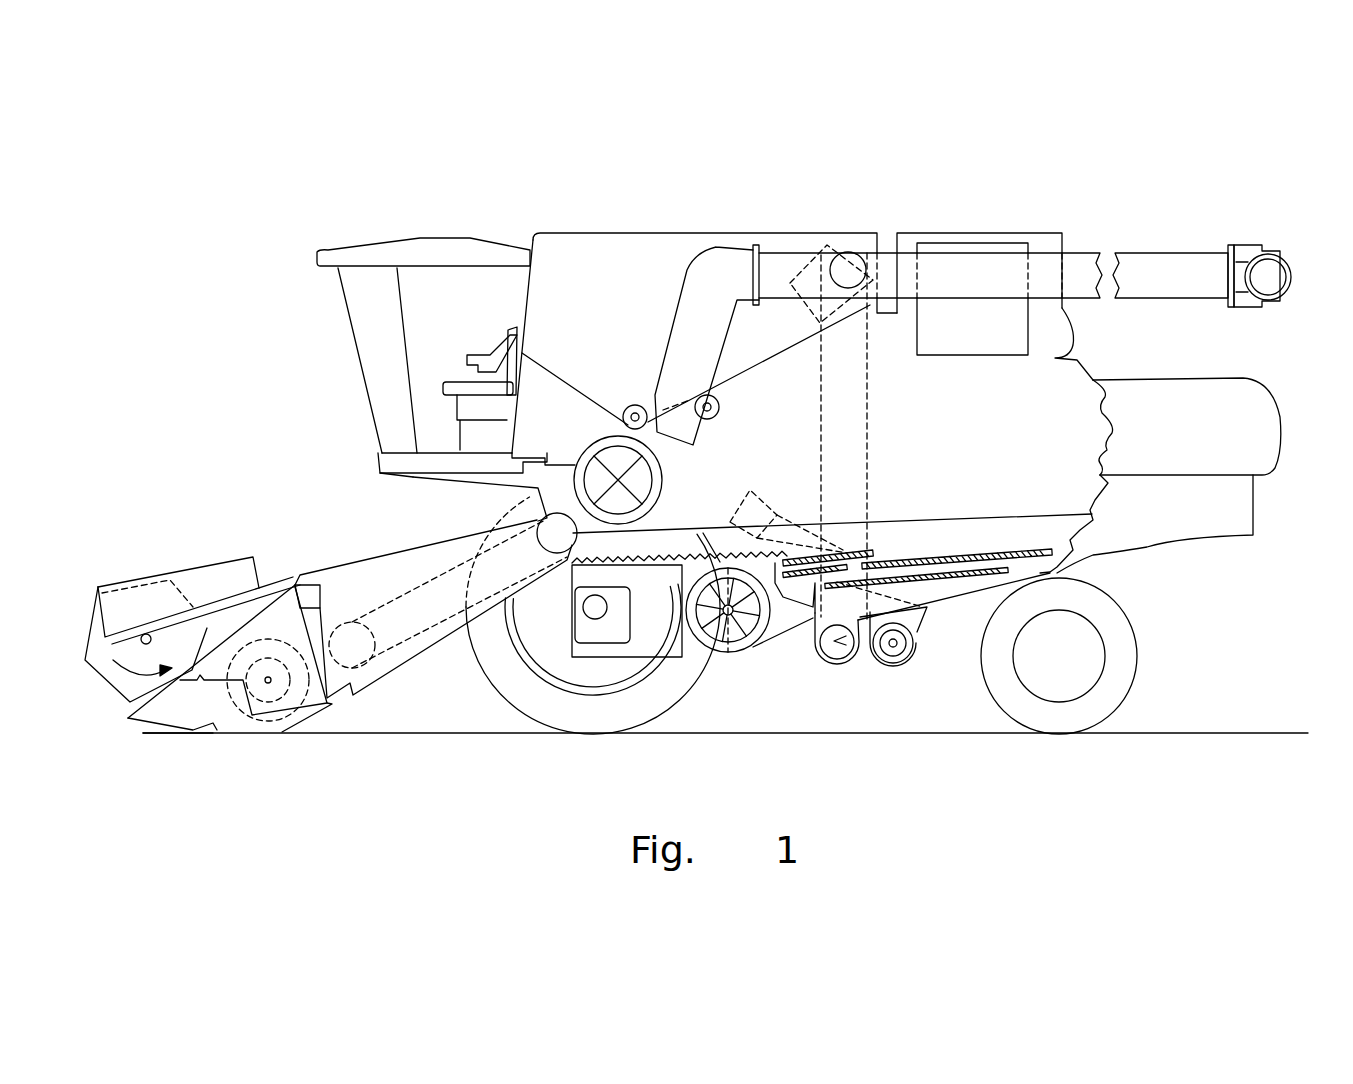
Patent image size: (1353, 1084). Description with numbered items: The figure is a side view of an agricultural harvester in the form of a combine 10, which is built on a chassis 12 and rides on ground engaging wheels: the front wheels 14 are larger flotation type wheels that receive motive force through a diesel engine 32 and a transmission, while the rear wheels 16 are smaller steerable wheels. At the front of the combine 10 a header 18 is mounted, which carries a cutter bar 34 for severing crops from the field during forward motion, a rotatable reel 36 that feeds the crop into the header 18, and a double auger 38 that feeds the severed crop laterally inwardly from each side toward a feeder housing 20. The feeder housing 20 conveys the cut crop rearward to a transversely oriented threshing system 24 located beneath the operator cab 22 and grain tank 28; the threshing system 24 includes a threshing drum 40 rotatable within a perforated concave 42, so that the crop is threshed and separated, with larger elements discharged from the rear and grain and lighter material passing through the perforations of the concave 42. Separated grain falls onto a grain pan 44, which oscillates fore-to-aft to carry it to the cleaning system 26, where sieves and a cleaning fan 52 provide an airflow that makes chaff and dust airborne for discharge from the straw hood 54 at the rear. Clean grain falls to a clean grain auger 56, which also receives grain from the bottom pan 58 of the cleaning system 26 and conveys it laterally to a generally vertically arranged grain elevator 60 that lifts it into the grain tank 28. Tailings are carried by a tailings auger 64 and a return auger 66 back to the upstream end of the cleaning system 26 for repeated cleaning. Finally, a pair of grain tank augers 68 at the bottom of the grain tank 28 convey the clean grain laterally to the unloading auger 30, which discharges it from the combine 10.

The combine 10 is at (415, 215).
The chassis 12 is at (1058, 570).
The front wheels 14 is at (498, 690).
The rear wheels 16 is at (1135, 668).
The header 18 is at (180, 550).
The feeder housing 20 is at (390, 568).
The operator cab 22 is at (352, 338).
The threshing system 24 is at (492, 502).
The cleaning system 26 is at (780, 680).
The grain tank 28 is at (586, 240).
The unloading auger 30 is at (1176, 232).
The diesel engine 32 is at (962, 245).
The cutter bar 34 is at (197, 735).
The rotatable reel 36 is at (93, 640).
The double auger 38 is at (270, 700).
The threshing drum 40 is at (600, 445).
The perforated concave 42 is at (665, 482).
The grain pan 44 is at (563, 575).
The cleaning fan 52 is at (730, 655).
The straw hood 54 is at (1268, 412).
The clean grain auger 56 is at (837, 663).
The bottom pan 58 is at (1000, 590).
The grain elevator 60 is at (870, 355).
The tailings auger 64 is at (890, 665).
The return auger 66 is at (808, 530).
The grain tank augers 68 is at (634, 403).